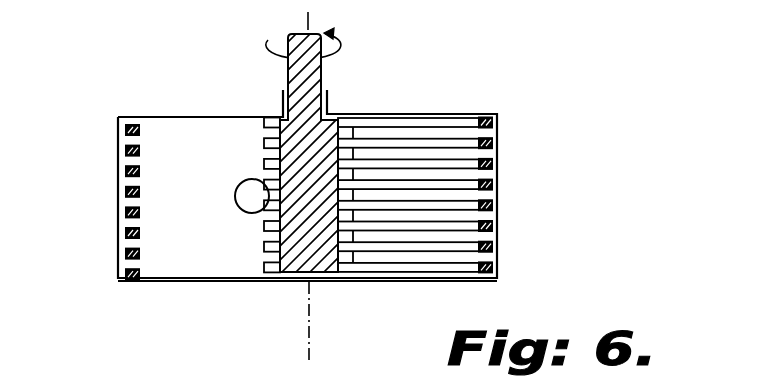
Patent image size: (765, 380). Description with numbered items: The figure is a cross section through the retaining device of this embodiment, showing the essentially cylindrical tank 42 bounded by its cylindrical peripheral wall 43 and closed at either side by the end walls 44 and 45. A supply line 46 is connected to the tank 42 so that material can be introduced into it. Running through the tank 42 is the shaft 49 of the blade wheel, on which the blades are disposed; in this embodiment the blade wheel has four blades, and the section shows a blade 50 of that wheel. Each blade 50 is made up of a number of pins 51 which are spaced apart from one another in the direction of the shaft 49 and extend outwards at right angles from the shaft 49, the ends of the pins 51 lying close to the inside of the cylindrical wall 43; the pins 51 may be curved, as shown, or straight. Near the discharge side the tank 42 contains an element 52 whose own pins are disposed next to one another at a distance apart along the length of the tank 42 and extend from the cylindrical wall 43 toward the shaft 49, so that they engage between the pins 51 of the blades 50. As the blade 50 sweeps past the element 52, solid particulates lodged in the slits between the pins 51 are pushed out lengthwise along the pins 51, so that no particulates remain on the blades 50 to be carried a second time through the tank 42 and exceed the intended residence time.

The tank 42 is at (418, 108).
The cylindrical peripheral wall 43 is at (118, 231).
The end wall 44 is at (190, 117).
The end wall 45 is at (165, 283).
The supply line 46 is at (252, 205).
The shaft 49 is at (317, 82).
The blade 50 is at (500, 190).
The pin 51 is at (455, 143).
The element 52 is at (346, 240).